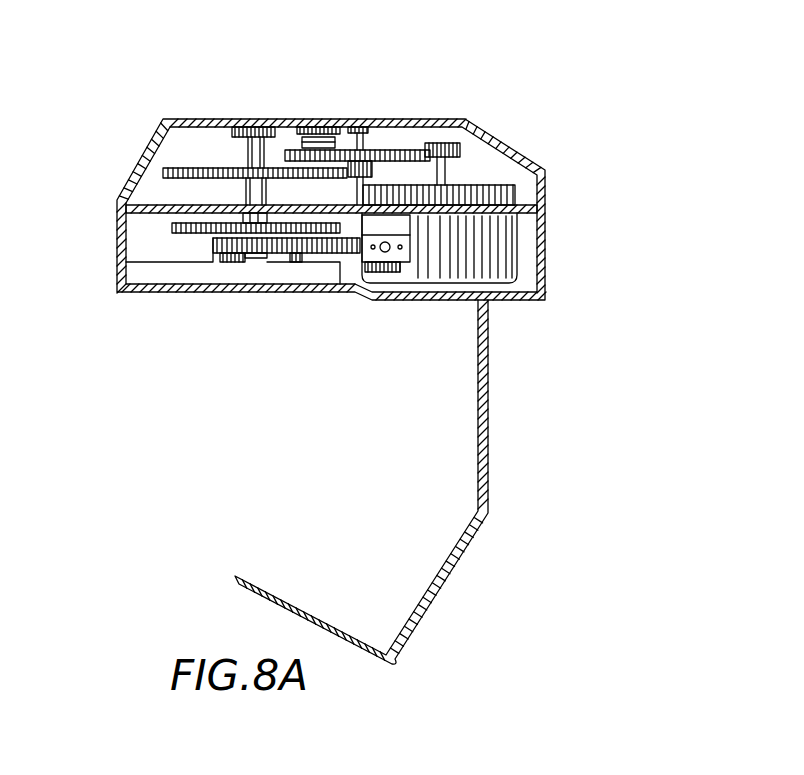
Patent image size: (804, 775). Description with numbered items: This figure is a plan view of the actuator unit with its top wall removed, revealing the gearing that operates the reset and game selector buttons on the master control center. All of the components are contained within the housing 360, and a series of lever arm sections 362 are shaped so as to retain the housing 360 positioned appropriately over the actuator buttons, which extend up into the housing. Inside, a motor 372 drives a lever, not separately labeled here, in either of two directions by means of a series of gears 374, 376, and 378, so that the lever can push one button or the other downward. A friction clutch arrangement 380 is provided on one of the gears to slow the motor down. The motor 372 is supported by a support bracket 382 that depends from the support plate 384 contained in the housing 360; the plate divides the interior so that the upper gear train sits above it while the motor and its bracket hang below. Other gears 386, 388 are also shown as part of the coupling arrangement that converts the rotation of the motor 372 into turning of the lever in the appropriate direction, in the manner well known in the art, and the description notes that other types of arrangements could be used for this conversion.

The housing 360 is at (553, 192).
The lever arm sections 362 is at (455, 566).
The motor 372 is at (493, 252).
The gear 374 is at (178, 168).
The gear 376 is at (390, 150).
The gear 378 is at (458, 145).
The friction clutch arrangement 380 is at (318, 122).
The support bracket 382 is at (400, 223).
The support plate 384 is at (126, 215).
The gear 386 is at (285, 253).
The gear 388 is at (193, 232).